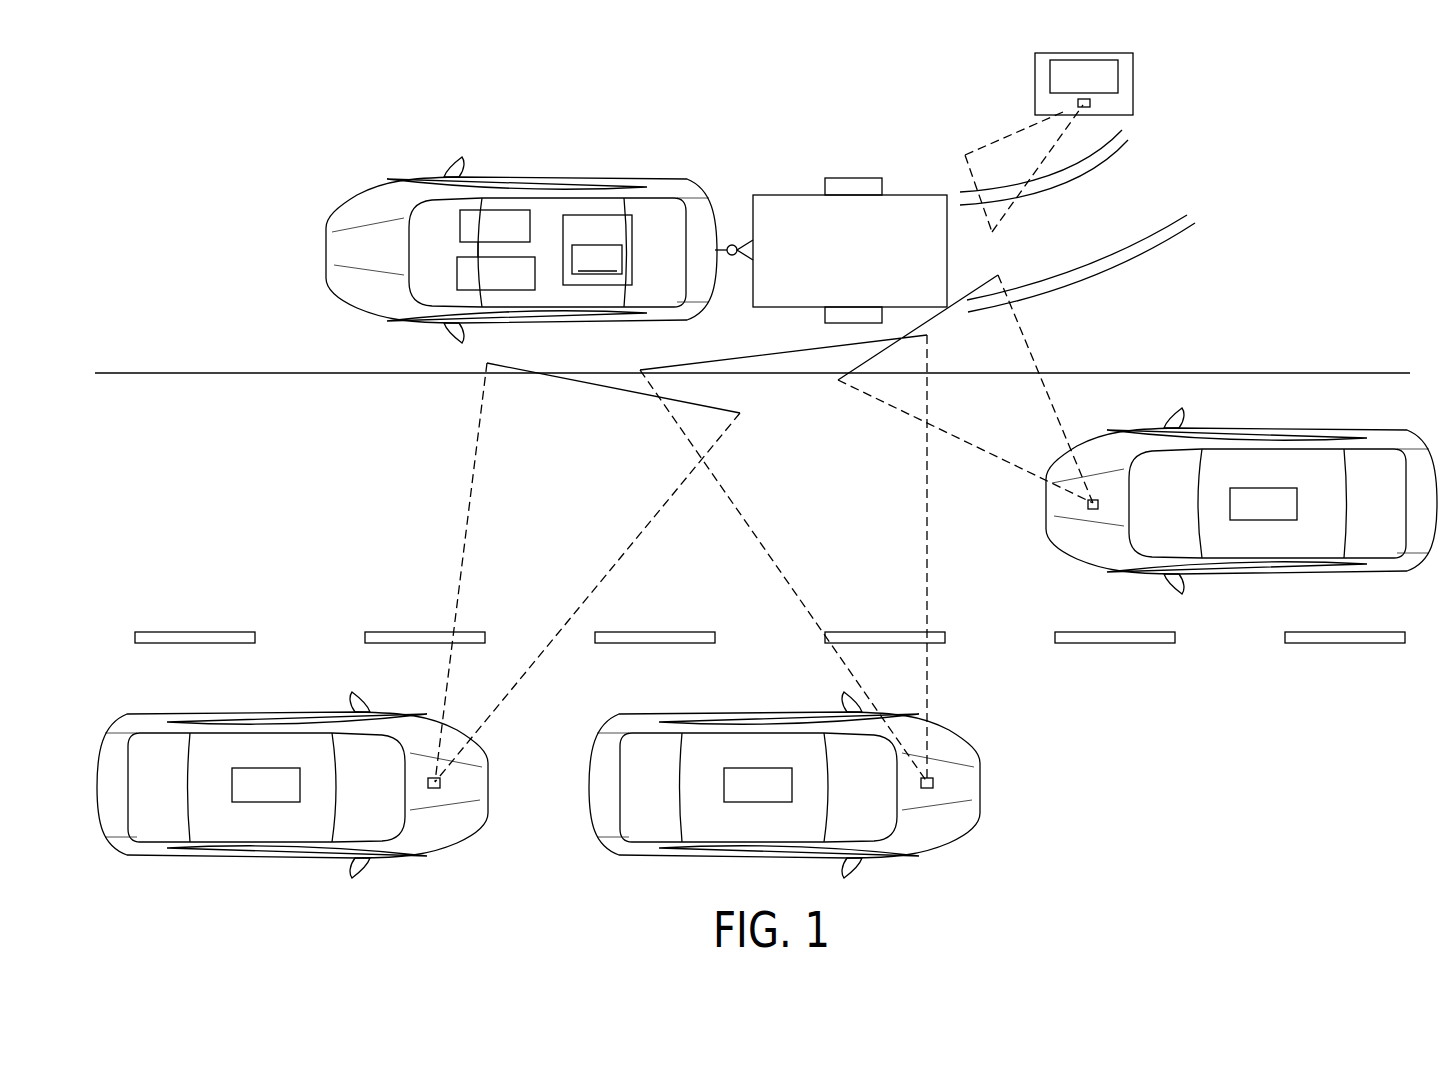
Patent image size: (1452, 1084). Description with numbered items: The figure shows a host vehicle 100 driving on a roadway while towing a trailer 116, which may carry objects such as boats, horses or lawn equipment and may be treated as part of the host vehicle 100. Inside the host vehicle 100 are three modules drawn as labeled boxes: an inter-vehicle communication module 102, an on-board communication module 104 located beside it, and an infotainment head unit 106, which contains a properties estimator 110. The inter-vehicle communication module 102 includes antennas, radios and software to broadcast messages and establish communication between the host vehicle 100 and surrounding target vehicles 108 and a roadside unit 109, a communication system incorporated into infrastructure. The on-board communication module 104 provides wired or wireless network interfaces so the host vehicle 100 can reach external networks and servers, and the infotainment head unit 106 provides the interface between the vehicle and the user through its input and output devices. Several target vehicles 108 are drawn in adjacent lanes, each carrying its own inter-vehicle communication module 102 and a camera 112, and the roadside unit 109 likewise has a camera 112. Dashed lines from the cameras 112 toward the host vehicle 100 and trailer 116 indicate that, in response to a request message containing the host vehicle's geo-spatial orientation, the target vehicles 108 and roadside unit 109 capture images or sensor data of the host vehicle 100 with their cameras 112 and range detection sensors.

The host vehicle 100 is at (682, 181).
The inter-vehicle communication module 102 is at (496, 209).
The on-board communication module 104 is at (483, 291).
The infotainment head unit 106 is at (632, 248).
The target vehicle 108 is at (490, 757).
The roadside unit 109 is at (1035, 75).
The properties estimator 110 is at (597, 259).
The cameras 112 is at (1091, 103).
The trailer 116 is at (917, 195).